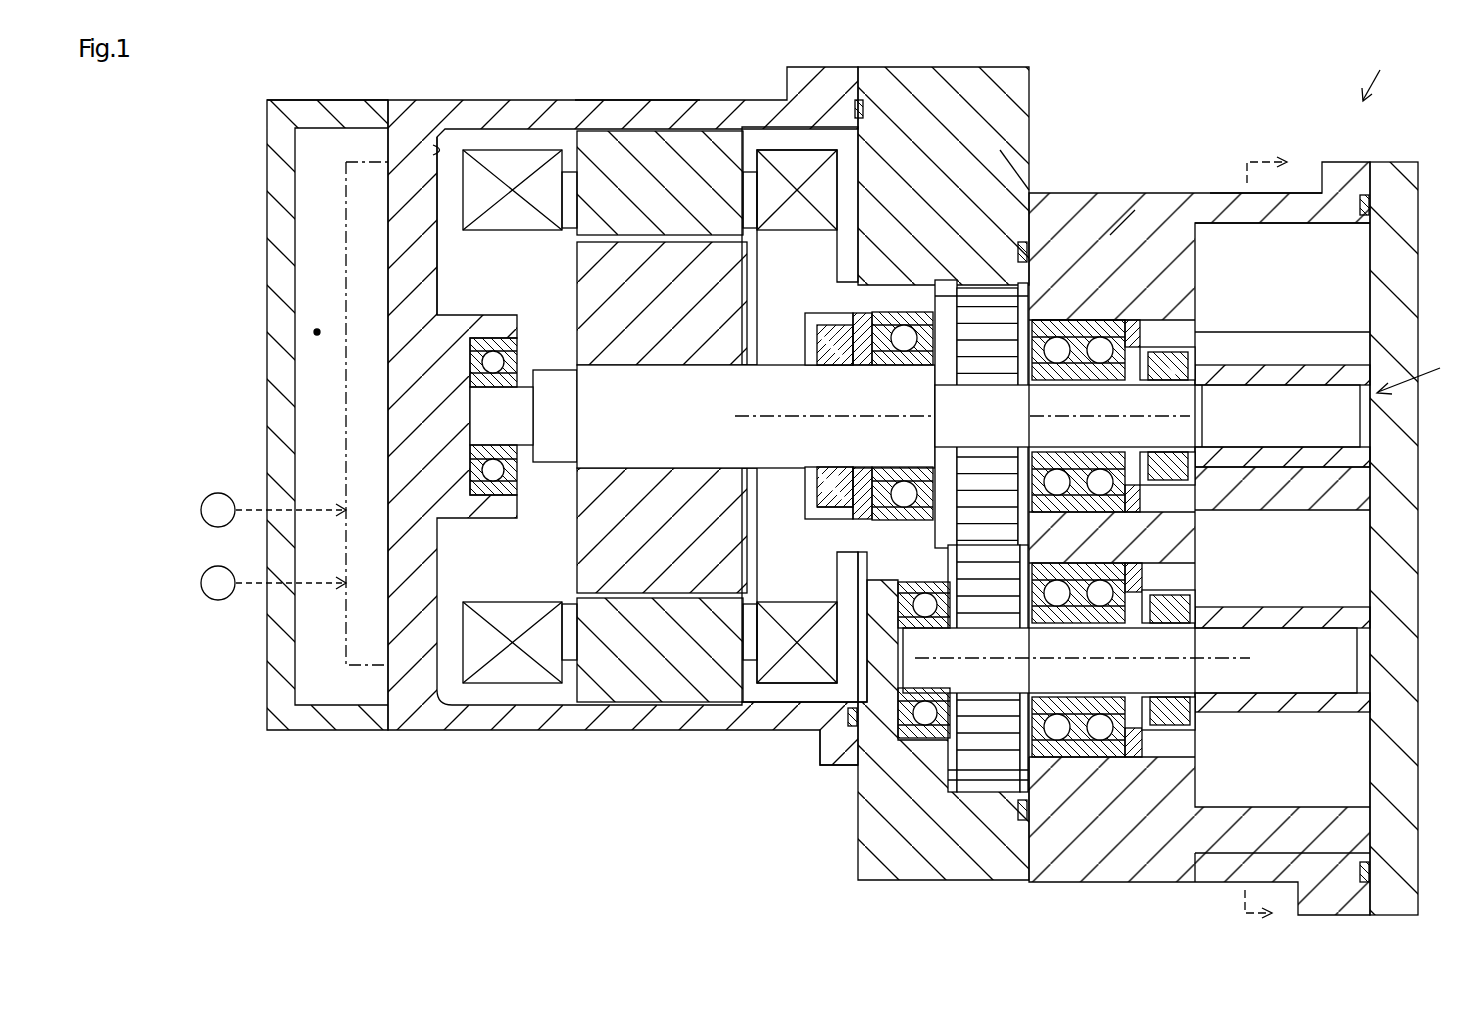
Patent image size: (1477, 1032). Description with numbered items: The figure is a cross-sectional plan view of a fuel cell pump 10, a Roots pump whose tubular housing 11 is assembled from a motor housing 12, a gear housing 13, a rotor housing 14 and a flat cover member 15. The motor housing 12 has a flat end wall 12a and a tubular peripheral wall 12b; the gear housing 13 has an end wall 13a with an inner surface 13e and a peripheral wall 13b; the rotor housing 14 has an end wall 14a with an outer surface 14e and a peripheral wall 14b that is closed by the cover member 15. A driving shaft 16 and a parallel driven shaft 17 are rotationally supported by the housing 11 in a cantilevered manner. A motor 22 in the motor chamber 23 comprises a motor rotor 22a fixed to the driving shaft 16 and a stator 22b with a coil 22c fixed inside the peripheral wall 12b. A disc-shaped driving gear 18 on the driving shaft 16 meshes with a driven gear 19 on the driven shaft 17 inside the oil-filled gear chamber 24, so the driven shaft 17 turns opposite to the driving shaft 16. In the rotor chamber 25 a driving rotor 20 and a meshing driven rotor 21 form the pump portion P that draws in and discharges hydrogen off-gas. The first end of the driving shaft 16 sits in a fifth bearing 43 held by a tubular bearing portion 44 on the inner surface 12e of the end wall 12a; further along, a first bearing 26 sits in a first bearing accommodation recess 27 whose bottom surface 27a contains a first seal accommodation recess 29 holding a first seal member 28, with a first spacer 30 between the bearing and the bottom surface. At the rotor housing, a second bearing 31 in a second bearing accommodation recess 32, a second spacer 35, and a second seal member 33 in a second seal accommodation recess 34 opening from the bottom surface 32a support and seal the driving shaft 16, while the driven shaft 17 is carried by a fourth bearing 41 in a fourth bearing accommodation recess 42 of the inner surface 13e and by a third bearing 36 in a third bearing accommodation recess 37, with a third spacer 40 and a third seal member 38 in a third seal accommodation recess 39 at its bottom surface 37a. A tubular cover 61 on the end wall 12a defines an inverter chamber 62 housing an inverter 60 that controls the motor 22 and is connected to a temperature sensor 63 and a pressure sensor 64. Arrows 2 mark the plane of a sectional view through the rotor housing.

The fuel cell pump 10 is at (1379, 69).
The housing 11 is at (303, 100).
The motor housing 12 is at (517, 100).
The end wall 12a is at (398, 238).
The peripheral wall 12b is at (660, 128).
The inner surface 12e is at (433, 150).
The gear housing 13 is at (858, 845).
The end wall 13a is at (822, 738).
The peripheral wall 13b is at (1020, 165).
The inner surface 13e is at (880, 788).
The rotor housing 14 is at (1340, 162).
The end wall 14a is at (1118, 240).
The peripheral wall 14b is at (1235, 210).
The outer surface 14e is at (1030, 765).
The cover member 15 is at (1392, 162).
The driving shaft 16 is at (777, 382).
The driven shaft 17 is at (1275, 693).
The driving gear 18 is at (1026, 298).
The driven gear 19 is at (985, 770).
The driving rotor 20 is at (1340, 372).
The driven rotor 21 is at (1200, 852).
The motor 22 is at (600, 128).
The motor rotor 22a is at (575, 540).
The stator 22b is at (655, 702).
The coil 22c is at (510, 683).
The motor chamber 23 is at (780, 143).
The gear chamber 24 is at (960, 290).
The rotor chamber 25 is at (1304, 298).
The first bearing 26 is at (905, 520).
The first bearing accommodation recess 27 is at (902, 318).
The bottom surface 27a is at (862, 325).
The first seal member 28 is at (812, 320).
The first seal accommodation recess 29 is at (810, 510).
The first spacer 30 is at (840, 520).
The second bearing 31 is at (1100, 326).
The second bearing accommodation recess 32 is at (1062, 326).
The bottom surface 32a is at (1168, 335).
The second seal member 33 is at (1170, 500).
The second seal accommodation recess 34 is at (1175, 350).
The second spacer 35 is at (1133, 326).
The third bearing 36 is at (1115, 525).
The third bearing accommodation recess 37 is at (1095, 757).
The bottom surface 37a is at (1170, 730).
The third seal member 38 is at (1140, 745).
The third seal accommodation recess 39 is at (1180, 608).
The third spacer 40 is at (1138, 580).
The fourth bearing 41 is at (925, 738).
The fourth bearing accommodation recess 42 is at (930, 592).
The fifth bearing 43 is at (497, 500).
The bearing portion 44 is at (497, 332).
The inverter 60 is at (346, 420).
The cover 61 is at (316, 100).
The inverter chamber 62 is at (317, 332).
The temperature sensor 63 is at (201, 510).
The pressure sensor 64 is at (201, 583).
The pump portion P is at (1416, 368).
The section line 2 is at (1274, 543).